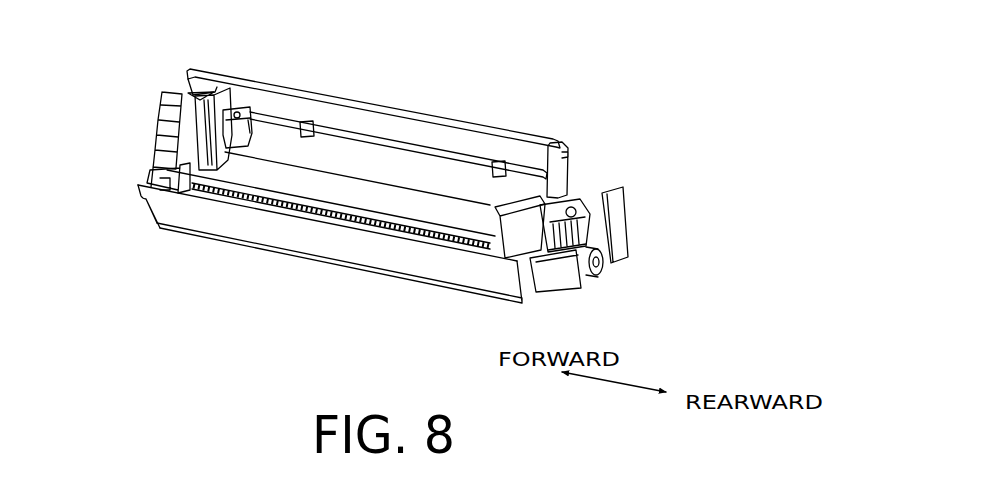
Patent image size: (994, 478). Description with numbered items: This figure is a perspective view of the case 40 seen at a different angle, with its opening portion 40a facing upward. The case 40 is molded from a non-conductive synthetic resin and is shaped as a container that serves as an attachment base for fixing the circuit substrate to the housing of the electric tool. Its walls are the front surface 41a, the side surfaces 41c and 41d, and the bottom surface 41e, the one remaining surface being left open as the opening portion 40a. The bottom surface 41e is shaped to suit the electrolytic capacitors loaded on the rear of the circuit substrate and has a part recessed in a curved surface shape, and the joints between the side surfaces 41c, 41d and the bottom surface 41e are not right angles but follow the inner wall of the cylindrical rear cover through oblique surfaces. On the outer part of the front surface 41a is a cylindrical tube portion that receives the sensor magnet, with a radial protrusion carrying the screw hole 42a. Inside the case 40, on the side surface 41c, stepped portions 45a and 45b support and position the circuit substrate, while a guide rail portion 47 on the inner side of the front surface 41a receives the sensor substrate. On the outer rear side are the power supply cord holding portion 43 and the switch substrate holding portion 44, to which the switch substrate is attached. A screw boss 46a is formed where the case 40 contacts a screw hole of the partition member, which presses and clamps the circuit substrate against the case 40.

The case 40 is at (581, 115).
The opening portion 40a is at (364, 102).
The front surface 41a is at (187, 146).
The side surface 41c is at (422, 136).
The side surface 41d is at (329, 245).
The bottom surface 41e is at (418, 210).
The screw hole 42a is at (181, 103).
The power supply cord holding portion 43 is at (578, 270).
The switch substrate holding portion 44 is at (601, 210).
The stepped portion 45a is at (305, 121).
The stepped portion 45b is at (498, 162).
The screw boss 46a is at (245, 106).
The guide rail portion 47 is at (207, 157).